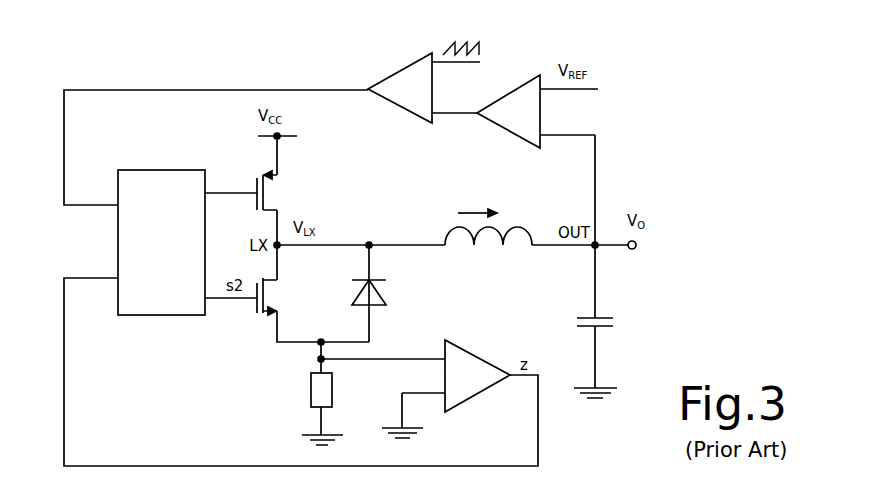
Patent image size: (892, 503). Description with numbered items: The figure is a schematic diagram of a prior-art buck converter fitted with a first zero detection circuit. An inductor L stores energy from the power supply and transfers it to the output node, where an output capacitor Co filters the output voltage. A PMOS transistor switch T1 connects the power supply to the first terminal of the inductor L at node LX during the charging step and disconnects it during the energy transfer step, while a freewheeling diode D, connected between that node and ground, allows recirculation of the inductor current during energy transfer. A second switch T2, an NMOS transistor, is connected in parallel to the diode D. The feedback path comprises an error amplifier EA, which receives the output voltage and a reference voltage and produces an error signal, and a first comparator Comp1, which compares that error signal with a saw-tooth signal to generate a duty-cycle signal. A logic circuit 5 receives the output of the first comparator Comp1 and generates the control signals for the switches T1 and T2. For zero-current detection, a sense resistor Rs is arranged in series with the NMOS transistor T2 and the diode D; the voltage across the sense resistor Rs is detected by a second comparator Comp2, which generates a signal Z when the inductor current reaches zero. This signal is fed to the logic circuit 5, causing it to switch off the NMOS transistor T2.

The logic circuit 5 is at (155, 187).
The switch (PMOS transistor) T1 is at (268, 192).
The second switch (NMOS transistor) T2 is at (268, 290).
The freewheeling diode D is at (374, 307).
The inductor L is at (488, 232).
The output capacitor Co is at (608, 266).
The sense resistor Rs is at (309, 392).
The first comparator Comp1 is at (400, 100).
The second comparator Comp2 is at (473, 366).
The integrator (error amplifier) EA is at (505, 126).